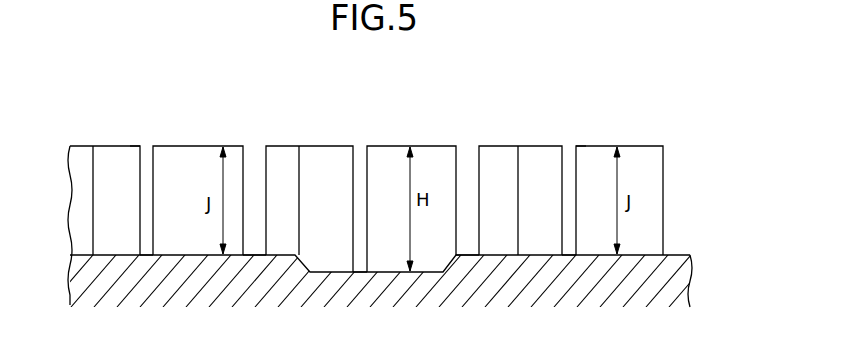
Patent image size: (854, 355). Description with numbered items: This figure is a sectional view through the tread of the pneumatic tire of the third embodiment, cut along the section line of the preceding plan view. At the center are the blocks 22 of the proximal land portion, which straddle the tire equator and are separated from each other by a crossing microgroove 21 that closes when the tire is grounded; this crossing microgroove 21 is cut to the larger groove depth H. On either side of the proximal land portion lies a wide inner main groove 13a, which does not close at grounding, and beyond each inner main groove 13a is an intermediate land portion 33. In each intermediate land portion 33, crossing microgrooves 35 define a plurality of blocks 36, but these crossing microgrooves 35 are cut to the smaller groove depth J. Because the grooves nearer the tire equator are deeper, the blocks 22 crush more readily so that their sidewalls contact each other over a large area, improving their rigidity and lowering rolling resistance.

The block 36 is at (120, 162).
The block 22 is at (328, 160).
The crossing microgroove 21 is at (358, 160).
The inner main groove 13a is at (253, 152).
The crossing microgroove 35 is at (147, 237).
The intermediate land portion 33 is at (143, 145).